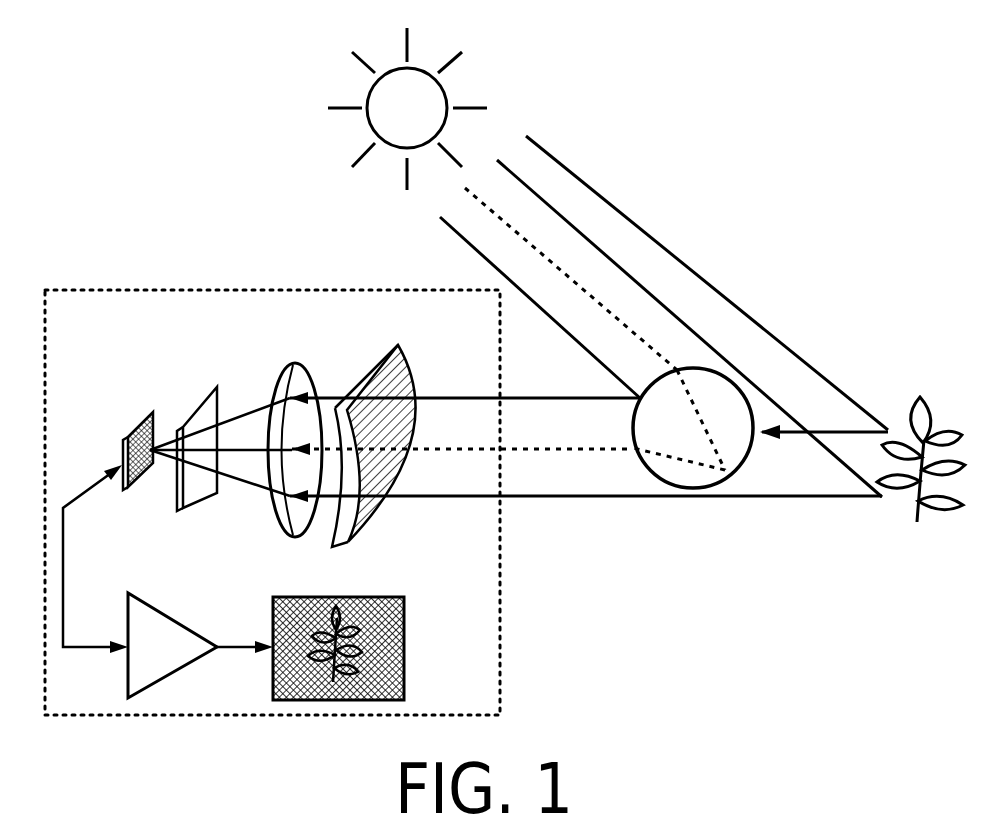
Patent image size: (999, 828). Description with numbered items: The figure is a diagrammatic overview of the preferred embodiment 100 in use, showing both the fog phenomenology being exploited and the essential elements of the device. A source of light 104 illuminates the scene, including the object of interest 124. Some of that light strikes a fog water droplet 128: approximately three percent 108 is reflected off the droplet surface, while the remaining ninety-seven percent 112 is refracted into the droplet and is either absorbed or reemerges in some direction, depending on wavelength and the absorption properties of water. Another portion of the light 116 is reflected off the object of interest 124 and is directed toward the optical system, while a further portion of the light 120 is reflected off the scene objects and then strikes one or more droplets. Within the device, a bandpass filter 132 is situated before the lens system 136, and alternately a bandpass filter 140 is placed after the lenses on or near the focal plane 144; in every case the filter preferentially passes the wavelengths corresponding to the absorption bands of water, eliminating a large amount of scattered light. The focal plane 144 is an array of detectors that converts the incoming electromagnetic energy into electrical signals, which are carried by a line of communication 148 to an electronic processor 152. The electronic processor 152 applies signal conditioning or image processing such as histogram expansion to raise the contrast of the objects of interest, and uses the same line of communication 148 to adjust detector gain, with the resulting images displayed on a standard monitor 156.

The preferred embodiment 100 is at (178, 290).
The source of light 104 is at (368, 122).
The reflected light portion (approximately three percent) 108 is at (500, 270).
The refracted light portion (approximately ninety-seven percent) 112 is at (530, 243).
The light reflected off scene objects 116 is at (564, 216).
The light reflected off scene objects striking droplets 120 is at (590, 186).
The object of interest 124 is at (916, 400).
The fog water droplet 128 is at (740, 466).
The bandpass filter 132 is at (398, 345).
The lens system 136 is at (291, 364).
The bandpass filter 140 is at (203, 489).
The focal plane 144 is at (132, 488).
The line of communication 148 is at (63, 602).
The electronic processor 152 is at (196, 633).
The monitor 156 is at (404, 637).